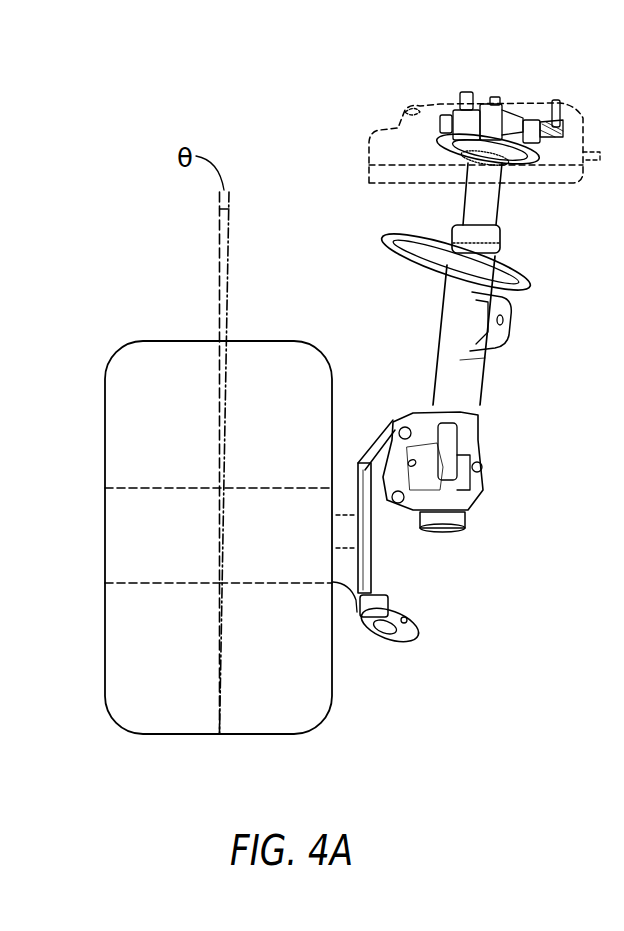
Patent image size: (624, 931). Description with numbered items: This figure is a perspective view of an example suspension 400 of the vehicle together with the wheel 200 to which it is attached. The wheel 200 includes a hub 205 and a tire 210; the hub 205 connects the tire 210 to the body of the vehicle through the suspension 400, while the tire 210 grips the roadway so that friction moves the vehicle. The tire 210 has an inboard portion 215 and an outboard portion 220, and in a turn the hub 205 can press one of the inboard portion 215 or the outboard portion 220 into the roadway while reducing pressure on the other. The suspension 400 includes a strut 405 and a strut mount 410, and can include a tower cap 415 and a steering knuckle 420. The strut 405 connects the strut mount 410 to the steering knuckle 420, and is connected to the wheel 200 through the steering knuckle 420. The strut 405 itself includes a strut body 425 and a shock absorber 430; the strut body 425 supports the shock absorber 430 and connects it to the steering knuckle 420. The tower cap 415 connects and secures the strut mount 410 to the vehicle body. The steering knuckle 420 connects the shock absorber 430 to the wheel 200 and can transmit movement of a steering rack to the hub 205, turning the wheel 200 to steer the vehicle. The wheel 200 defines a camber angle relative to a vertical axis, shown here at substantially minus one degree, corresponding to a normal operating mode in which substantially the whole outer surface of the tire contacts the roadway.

The wheel 200 is at (152, 282).
The hub 205 is at (138, 487).
The tire 210 is at (118, 349).
The inboard portion 215 is at (273, 720).
The outboard portion 220 is at (163, 720).
The suspension 400 is at (295, 122).
The strut 405 is at (543, 233).
The strut mount 410 is at (548, 78).
The tower cap 415 is at (405, 108).
The steering knuckle 420 is at (370, 557).
The strut body 425 is at (448, 333).
The shock absorber 430 is at (478, 198).